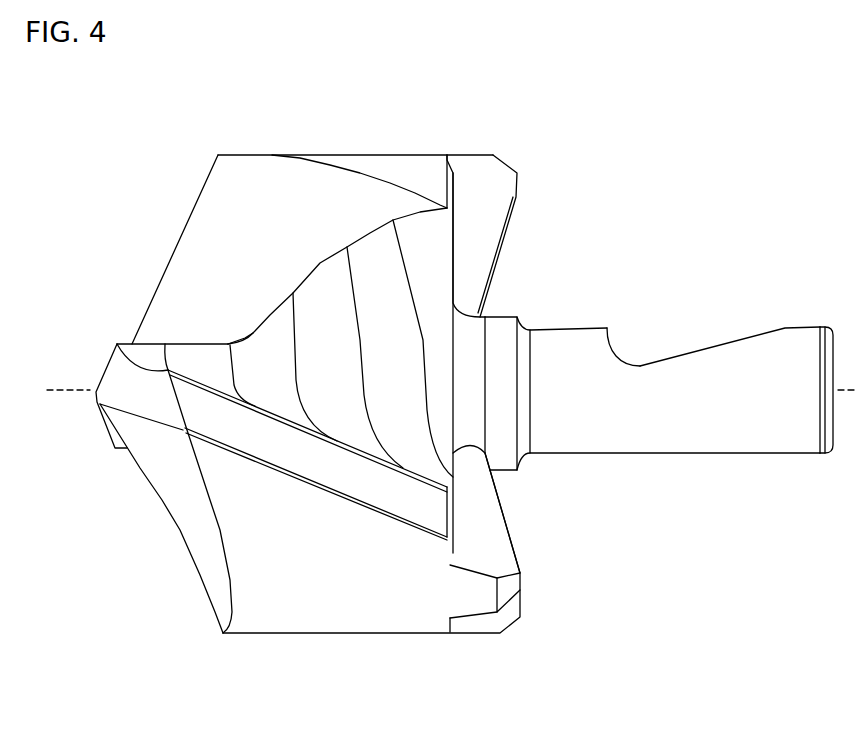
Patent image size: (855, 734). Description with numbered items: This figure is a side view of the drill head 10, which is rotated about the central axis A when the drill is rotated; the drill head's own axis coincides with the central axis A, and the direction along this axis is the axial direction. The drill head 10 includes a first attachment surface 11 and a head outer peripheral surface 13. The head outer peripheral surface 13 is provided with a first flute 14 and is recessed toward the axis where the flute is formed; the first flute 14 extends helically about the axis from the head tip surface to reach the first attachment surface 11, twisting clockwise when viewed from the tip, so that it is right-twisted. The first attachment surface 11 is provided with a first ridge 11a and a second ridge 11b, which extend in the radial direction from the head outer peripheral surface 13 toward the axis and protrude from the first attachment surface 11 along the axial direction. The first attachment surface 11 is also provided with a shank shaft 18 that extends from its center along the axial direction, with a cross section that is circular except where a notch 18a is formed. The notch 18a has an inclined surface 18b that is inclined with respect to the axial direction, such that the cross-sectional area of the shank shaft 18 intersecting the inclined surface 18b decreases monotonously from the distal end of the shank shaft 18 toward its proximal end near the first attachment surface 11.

The drill head 10 is at (152, 203).
The first attachment surface 11 is at (443, 552).
The first ridge 11a is at (483, 173).
The second ridge 11b is at (508, 565).
The head outer peripheral surface 13 is at (330, 615).
The first flute 14 is at (367, 258).
The shank shaft 18 is at (702, 432).
The notch 18a is at (650, 342).
The inclined surface 18b is at (722, 345).
The central axis A is at (448, 375).